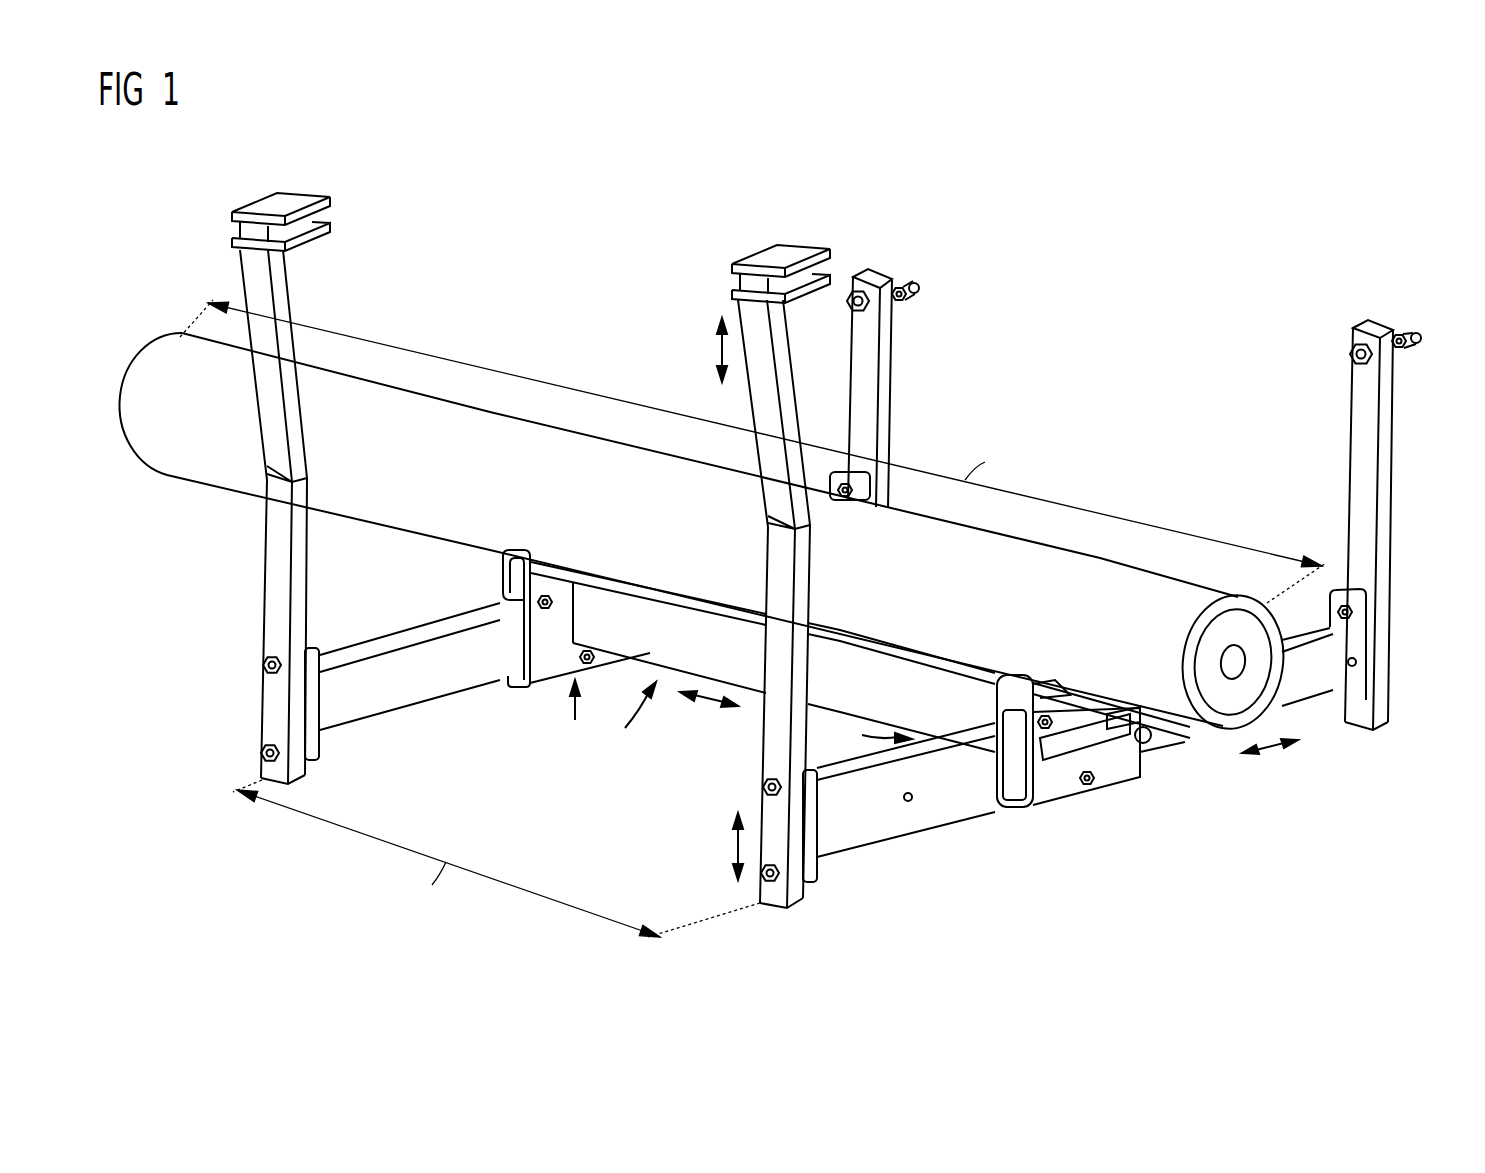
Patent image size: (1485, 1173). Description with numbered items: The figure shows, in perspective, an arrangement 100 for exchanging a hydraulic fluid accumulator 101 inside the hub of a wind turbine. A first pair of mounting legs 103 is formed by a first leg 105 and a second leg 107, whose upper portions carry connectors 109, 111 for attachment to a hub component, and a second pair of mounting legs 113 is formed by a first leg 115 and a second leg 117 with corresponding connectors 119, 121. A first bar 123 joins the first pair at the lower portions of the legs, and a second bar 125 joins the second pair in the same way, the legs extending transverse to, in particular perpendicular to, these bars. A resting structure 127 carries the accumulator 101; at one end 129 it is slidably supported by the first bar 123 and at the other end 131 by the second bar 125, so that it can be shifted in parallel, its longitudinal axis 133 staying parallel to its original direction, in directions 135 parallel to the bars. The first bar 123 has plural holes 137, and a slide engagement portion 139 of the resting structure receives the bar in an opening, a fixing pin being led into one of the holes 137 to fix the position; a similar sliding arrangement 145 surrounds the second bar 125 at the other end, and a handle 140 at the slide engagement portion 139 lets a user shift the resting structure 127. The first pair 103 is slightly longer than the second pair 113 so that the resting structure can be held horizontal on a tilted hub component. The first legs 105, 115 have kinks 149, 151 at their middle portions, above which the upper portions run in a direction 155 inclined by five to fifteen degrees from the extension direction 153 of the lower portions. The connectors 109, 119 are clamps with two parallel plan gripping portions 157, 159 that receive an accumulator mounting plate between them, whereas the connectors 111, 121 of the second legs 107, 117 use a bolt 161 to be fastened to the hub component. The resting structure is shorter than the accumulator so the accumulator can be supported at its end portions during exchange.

The arrangement 100 is at (1300, 181).
The hydraulic fluid accumulator 101 is at (165, 470).
The first pair of mounting legs 103 is at (748, 918).
The first leg of the first pair 105 is at (760, 778).
The second leg of the first pair 107 is at (1390, 460).
The connector of the first leg of the first pair 109 is at (792, 232).
The connector of the second leg of the first pair 111 is at (1386, 295).
The second pair of mounting legs 113 is at (232, 776).
The first leg of the second pair 115 is at (275, 598).
The second leg of the second pair 117 is at (880, 382).
The connector of the first leg of the second pair 119 is at (289, 183).
The connector of the second leg of the second pair 121 is at (894, 265).
The first bar 123 is at (845, 838).
The second bar 125 is at (375, 705).
The resting structure 127 is at (628, 724).
The one end of the resting structure 129 is at (863, 738).
The other end of the resting structure 131 is at (573, 722).
The longitudinal axis of the resting structure 133 is at (708, 708).
The directions of movement 135 is at (1275, 760).
The holes 137 is at (912, 801).
The slide engagement portion 139 is at (1055, 790).
The handle 140 is at (1108, 750).
The sliding arrangement 145 is at (540, 690).
The kink 149 is at (285, 480).
The kink 151 is at (780, 528).
The extension direction of the lower leg portion 153 is at (734, 850).
The direction of the upper leg portion 155 is at (718, 352).
The gripping portion 157 is at (252, 210).
The gripping portion 159 is at (345, 225).
The bolt 161 is at (915, 300).